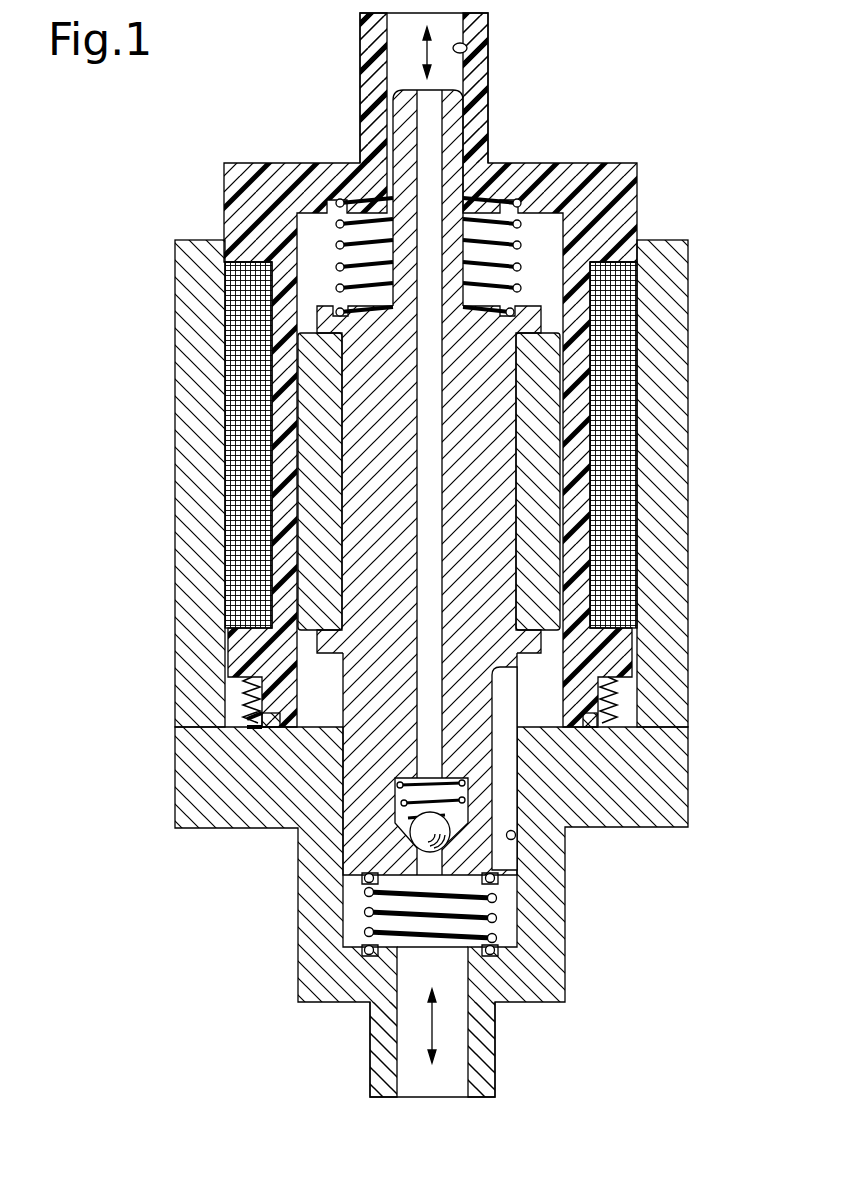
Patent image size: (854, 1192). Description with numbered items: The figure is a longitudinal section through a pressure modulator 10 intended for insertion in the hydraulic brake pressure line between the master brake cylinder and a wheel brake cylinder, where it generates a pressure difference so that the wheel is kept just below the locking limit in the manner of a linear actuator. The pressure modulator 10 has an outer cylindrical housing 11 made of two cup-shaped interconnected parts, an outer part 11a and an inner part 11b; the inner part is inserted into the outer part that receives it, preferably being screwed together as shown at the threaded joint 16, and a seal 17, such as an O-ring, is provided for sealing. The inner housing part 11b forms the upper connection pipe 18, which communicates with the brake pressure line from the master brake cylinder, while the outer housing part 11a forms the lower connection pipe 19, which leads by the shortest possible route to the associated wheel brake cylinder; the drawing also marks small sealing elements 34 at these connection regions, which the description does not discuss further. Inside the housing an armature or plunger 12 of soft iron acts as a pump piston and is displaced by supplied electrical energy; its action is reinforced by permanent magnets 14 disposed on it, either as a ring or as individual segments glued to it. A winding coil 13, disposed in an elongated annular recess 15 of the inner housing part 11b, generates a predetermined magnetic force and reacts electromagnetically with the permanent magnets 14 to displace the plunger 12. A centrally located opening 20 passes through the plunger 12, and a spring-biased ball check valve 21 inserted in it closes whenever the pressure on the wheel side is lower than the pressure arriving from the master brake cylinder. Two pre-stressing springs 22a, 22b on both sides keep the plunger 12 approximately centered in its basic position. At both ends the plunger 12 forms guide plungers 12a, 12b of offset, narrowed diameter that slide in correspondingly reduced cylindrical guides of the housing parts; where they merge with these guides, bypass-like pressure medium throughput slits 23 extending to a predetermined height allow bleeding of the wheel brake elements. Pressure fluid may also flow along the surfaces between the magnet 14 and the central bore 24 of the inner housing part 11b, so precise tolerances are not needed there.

The pressure modulator 10 is at (695, 292).
The outer cylindrical housing 11 is at (697, 513).
The outer housing part 11a is at (667, 797).
The inner housing part 11b is at (633, 183).
The armature or plunger 12 is at (333, 378).
The guide plunger 12a is at (458, 172).
The guide plunger 12b is at (360, 768).
The winding coil 13 is at (237, 325).
The permanent magnets 14 is at (552, 362).
The elongated annular recess 15 is at (640, 263).
The screw connection 16 is at (618, 702).
The seal 17 is at (255, 728).
The upper connection pipe 18 is at (494, 18).
The lower connection pipe 19 is at (495, 1060).
The opening 20 is at (420, 143).
The check valve 21 is at (447, 835).
The pre-stressing spring 22a is at (355, 228).
The pre-stressing spring 22b is at (476, 900).
The pressure medium throughput slits 23 is at (508, 763).
The central bore 24 is at (300, 730).
The seal ring 34 is at (467, 48).